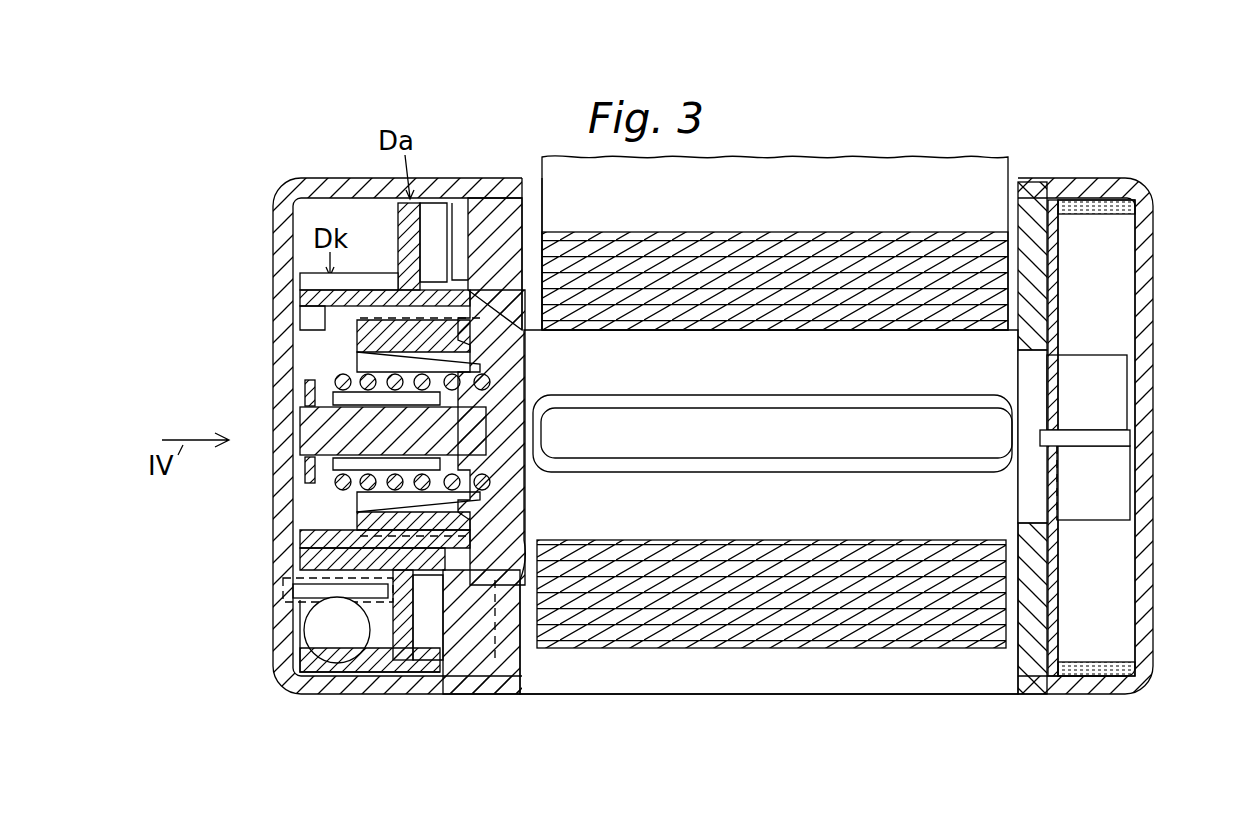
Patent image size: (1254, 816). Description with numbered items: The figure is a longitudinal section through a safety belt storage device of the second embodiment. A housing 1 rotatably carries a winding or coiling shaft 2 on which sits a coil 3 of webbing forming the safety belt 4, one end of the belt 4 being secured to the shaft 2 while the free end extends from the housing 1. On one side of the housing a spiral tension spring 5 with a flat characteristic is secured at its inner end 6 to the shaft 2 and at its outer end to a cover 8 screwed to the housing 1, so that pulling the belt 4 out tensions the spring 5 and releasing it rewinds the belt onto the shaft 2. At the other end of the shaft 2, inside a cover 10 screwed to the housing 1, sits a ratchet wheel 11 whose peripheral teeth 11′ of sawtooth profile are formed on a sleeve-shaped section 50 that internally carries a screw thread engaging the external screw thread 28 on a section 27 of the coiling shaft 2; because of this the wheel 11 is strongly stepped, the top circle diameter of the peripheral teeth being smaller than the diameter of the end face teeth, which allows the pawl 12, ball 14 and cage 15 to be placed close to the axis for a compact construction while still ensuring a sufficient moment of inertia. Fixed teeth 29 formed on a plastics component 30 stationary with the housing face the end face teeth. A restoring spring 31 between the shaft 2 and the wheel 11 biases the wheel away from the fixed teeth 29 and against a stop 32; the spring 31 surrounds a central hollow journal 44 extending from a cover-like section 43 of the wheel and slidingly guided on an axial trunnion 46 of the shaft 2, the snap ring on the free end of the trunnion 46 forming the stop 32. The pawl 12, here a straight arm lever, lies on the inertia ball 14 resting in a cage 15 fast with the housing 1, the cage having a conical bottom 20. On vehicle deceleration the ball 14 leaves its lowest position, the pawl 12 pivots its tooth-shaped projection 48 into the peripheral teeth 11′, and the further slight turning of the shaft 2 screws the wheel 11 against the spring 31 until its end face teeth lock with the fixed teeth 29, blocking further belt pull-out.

The housing 1 is at (505, 680).
The winding or coiling shaft 2 is at (1110, 505).
The coil of webbing 3 is at (942, 642).
The safety belt 4 is at (836, 170).
The spiral tension spring 5 is at (1120, 288).
The inner end of spring 6 is at (1095, 445).
The cover 8 is at (1135, 455).
The cover 10 is at (283, 196).
The ratchet wheel 11 is at (410, 222).
The peripheral teeth 11′ is at (312, 283).
The pawl 12 is at (305, 590).
The ball 14 is at (313, 630).
The cage 15 is at (296, 662).
The conical bottom 20 is at (378, 650).
The section of coiling shaft 27 is at (318, 345).
The external screw thread 28 is at (312, 547).
The fixed teeth 29 is at (462, 212).
The component 30 is at (498, 555).
The restoring spring 31 is at (485, 392).
The stop 32 is at (305, 462).
The cover-like section 43 is at (305, 510).
The central hollow journal 44 is at (438, 400).
The axial trunnion 46 is at (305, 428).
The tooth-shaped projection 48 is at (320, 600).
The sleeve-shaped section 50 is at (312, 300).